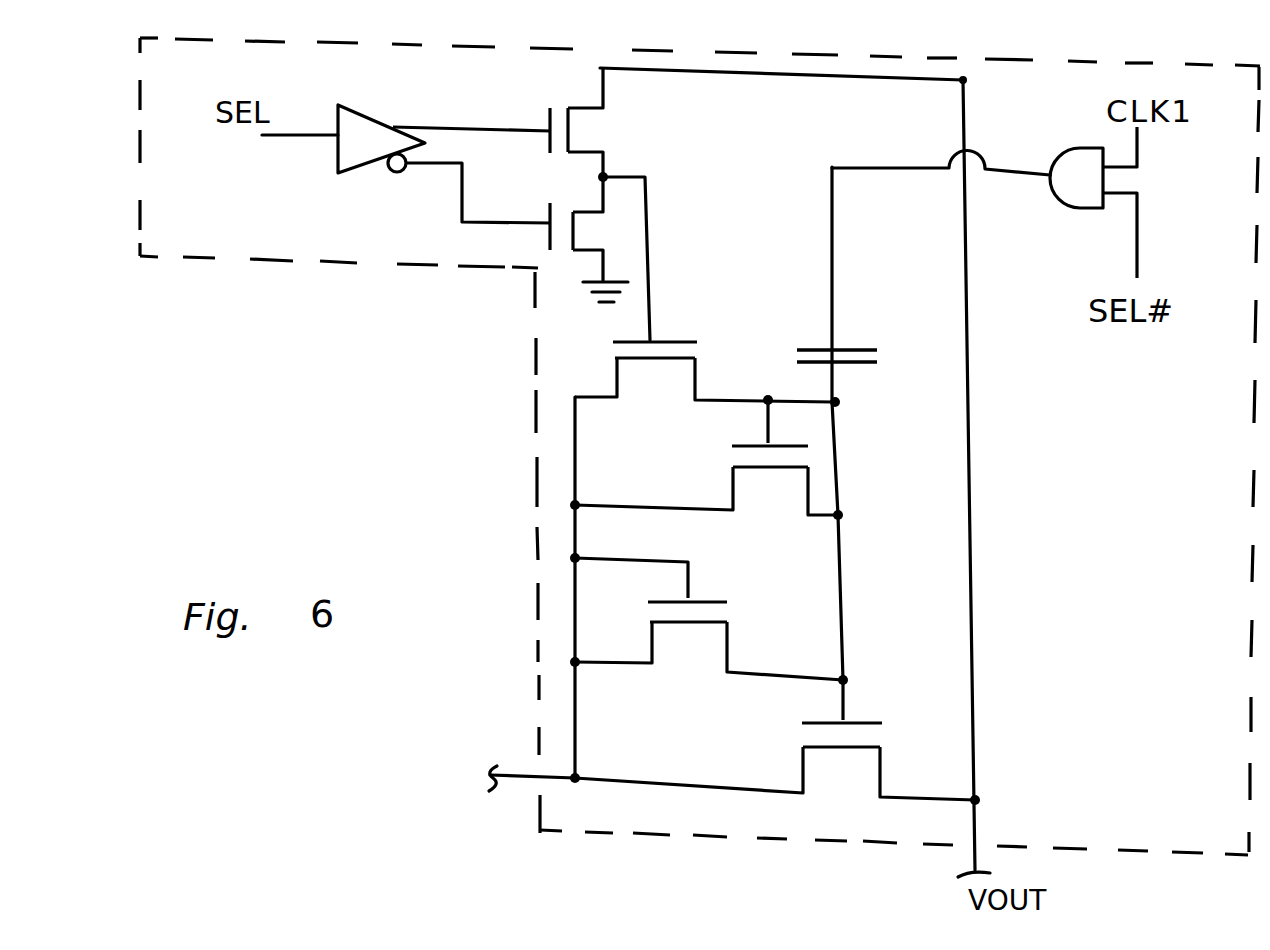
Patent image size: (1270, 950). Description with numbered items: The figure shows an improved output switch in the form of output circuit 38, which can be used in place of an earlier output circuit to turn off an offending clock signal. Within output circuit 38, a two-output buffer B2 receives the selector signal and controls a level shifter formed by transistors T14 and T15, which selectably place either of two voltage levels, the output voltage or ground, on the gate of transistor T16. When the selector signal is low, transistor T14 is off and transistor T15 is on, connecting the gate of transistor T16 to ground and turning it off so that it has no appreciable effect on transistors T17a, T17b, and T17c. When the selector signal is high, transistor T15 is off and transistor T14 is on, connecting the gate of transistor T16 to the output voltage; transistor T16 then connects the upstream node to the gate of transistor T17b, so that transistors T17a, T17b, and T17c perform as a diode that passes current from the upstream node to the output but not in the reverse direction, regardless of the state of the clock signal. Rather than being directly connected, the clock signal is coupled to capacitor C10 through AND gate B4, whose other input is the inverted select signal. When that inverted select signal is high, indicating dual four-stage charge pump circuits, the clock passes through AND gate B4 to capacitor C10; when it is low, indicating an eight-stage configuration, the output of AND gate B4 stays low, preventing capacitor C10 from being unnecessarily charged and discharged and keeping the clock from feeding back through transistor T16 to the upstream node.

The two-output buffer B2 is at (444, 141).
The transistor T14 is at (635, 122).
The transistor T15 is at (643, 229).
The AND gate B4 is at (1085, 196).
The capacitor C10 is at (882, 359).
The transistor T16 is at (703, 399).
The transistor T17a is at (709, 642).
The transistor T17b is at (775, 740).
The transistor T17c is at (706, 486).
The output circuit 38 is at (1175, 746).